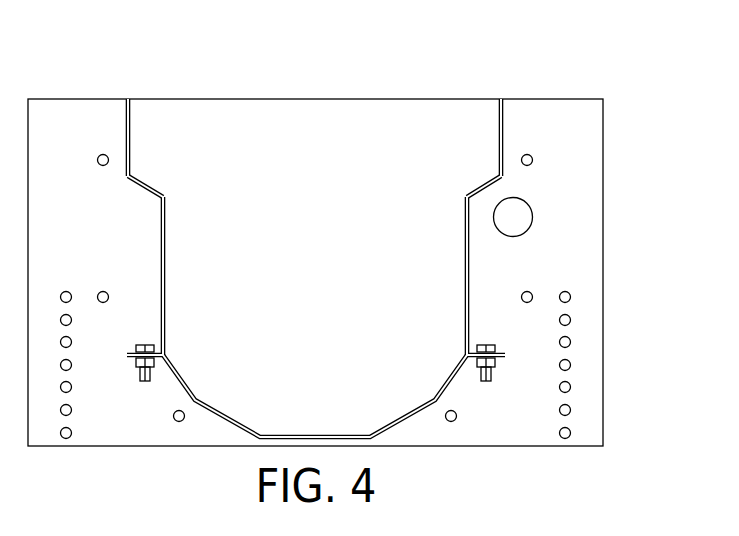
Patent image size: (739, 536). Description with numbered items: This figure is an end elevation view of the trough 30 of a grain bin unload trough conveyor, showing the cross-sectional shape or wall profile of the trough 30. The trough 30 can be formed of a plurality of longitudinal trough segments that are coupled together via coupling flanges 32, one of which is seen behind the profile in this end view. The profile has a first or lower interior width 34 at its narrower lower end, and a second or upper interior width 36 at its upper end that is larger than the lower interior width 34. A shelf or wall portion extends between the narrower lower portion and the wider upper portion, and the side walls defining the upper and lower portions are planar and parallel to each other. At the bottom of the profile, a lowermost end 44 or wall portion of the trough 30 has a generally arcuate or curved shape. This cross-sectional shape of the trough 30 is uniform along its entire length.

The trough 30 is at (212, 66).
The coupling flange 32 is at (582, 252).
The lower interior width 34 is at (465, 263).
The upper interior width 36 is at (131, 125).
The lowermost end 44 is at (233, 413).